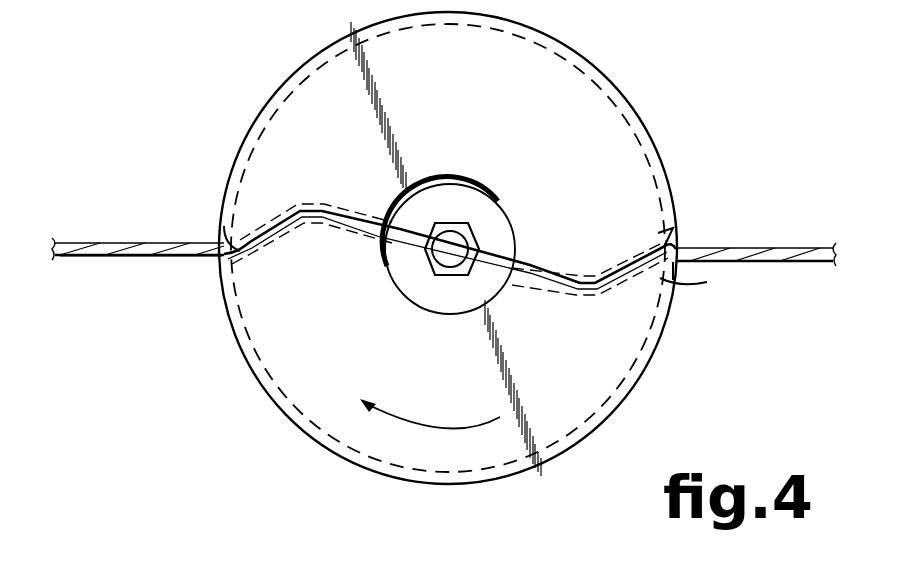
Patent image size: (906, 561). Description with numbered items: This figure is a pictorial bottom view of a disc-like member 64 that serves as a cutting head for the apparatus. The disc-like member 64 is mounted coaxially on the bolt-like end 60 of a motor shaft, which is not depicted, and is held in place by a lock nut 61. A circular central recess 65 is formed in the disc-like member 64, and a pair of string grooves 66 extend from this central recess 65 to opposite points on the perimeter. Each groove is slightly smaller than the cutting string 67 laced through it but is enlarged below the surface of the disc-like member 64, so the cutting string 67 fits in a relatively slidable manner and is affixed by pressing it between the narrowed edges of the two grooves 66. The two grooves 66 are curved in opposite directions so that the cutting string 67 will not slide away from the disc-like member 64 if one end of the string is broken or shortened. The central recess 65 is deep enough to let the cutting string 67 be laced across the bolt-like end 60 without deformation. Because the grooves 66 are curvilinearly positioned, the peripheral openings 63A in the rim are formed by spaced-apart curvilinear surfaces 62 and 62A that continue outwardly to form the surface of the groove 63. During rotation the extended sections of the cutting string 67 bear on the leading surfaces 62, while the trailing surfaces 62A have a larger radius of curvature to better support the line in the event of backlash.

The bolt-like end 60 is at (440, 262).
The lock nut 61 is at (445, 224).
The leading surface 62 is at (235, 222).
The trailing surface 62A is at (237, 262).
The groove 63 is at (283, 393).
The peripheral opening 63A is at (214, 259).
The disc-like member 64 is at (586, 61).
The central recess 65 is at (440, 184).
The string groove 66 is at (282, 208).
The cutting string 67 is at (100, 242).